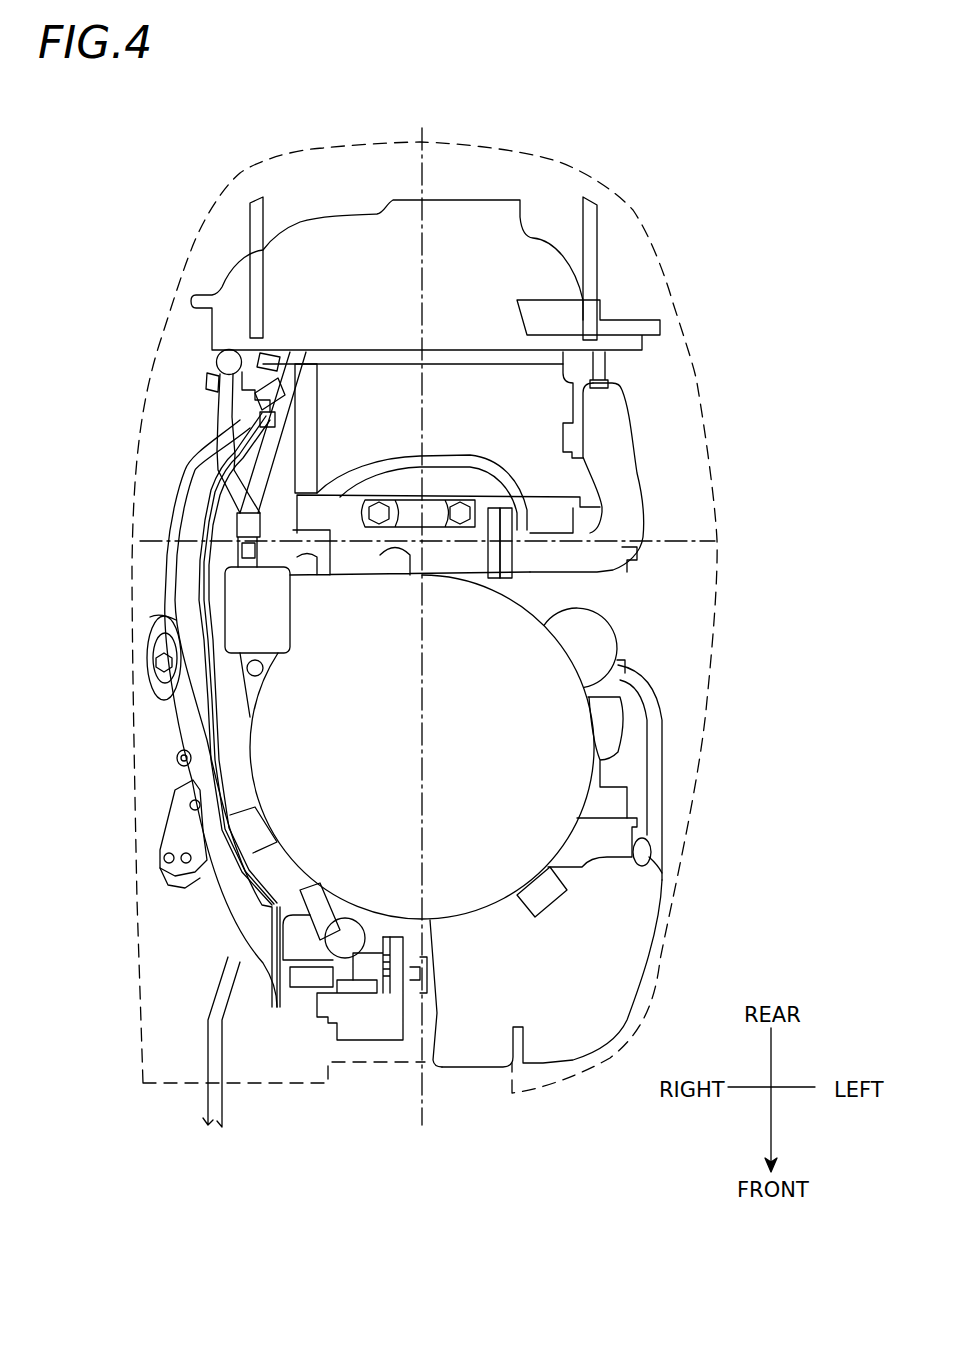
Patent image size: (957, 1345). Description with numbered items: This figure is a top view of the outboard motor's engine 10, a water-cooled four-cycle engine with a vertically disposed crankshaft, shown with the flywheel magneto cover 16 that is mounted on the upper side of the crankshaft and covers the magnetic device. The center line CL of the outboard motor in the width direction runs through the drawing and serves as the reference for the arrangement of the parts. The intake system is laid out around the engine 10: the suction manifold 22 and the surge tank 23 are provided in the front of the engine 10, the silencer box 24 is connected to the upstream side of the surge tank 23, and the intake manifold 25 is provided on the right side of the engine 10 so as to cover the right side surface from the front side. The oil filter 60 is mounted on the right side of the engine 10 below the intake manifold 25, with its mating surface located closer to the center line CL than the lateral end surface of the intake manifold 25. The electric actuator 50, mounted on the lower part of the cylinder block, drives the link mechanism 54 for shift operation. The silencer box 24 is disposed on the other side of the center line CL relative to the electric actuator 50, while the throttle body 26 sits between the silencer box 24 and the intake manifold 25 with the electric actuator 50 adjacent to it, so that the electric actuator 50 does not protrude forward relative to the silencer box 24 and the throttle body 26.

The engine 10 is at (658, 487).
The flywheel magneto cover 16 is at (553, 727).
The suction manifold 22 is at (613, 842).
The surge tank 23 is at (477, 1040).
The silencer box 24 is at (575, 980).
The intake manifold 25 is at (195, 497).
The throttle body 26 is at (360, 983).
The electric actuator 50 is at (180, 886).
The link mechanism 54 is at (176, 800).
The oil filter 60 is at (148, 633).
The center line CL is at (427, 133).